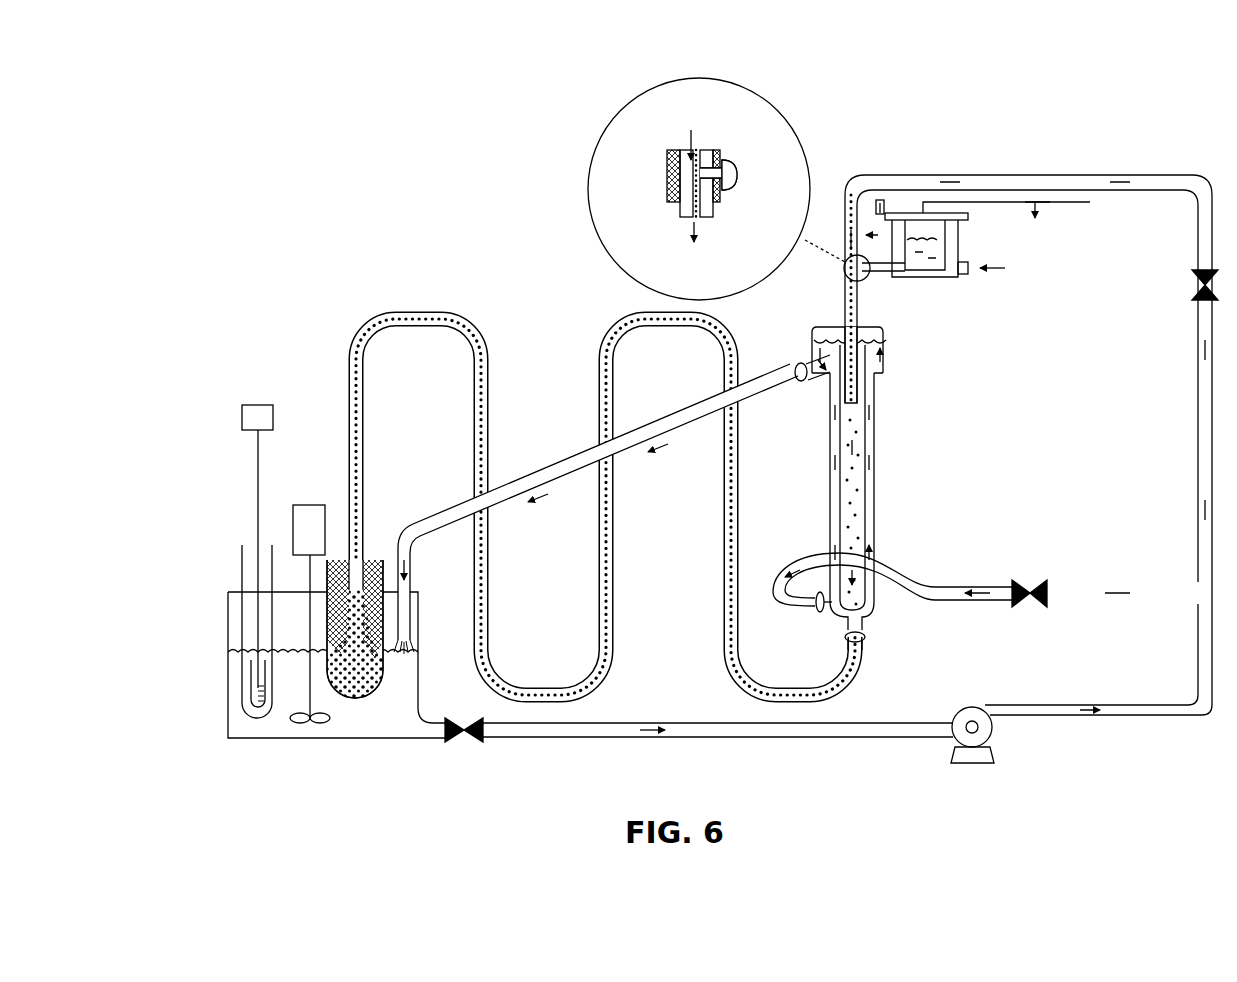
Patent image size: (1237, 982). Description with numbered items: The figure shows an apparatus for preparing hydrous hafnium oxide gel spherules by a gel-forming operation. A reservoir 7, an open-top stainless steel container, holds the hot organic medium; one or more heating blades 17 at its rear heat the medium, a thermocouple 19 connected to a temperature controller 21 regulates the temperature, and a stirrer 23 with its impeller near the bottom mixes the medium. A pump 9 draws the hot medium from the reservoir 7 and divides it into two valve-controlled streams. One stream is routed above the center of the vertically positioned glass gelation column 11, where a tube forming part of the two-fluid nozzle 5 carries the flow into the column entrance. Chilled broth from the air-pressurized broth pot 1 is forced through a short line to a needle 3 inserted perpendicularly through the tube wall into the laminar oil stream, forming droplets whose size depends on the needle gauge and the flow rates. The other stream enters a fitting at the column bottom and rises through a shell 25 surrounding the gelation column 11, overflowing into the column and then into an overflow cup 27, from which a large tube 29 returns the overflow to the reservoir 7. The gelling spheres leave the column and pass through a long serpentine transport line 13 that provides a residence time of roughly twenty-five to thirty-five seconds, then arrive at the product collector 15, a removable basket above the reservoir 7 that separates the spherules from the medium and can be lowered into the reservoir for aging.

The broth pot 1 is at (920, 281).
The needle 3 is at (724, 160).
The two-fluid nozzle 5 is at (600, 131).
The reservoir 7 is at (281, 750).
The pump 9 is at (978, 768).
The gelation column 11 is at (880, 470).
The transport line 13 is at (490, 327).
The product collector 15 is at (362, 706).
The heating blade 17 is at (242, 560).
The thermocouple 19 is at (256, 496).
The temperature controller 21 is at (259, 403).
The stirrer 23 is at (313, 503).
The shell 25 is at (878, 412).
The overflow cup 27 is at (892, 362).
The large tube 29 is at (787, 390).